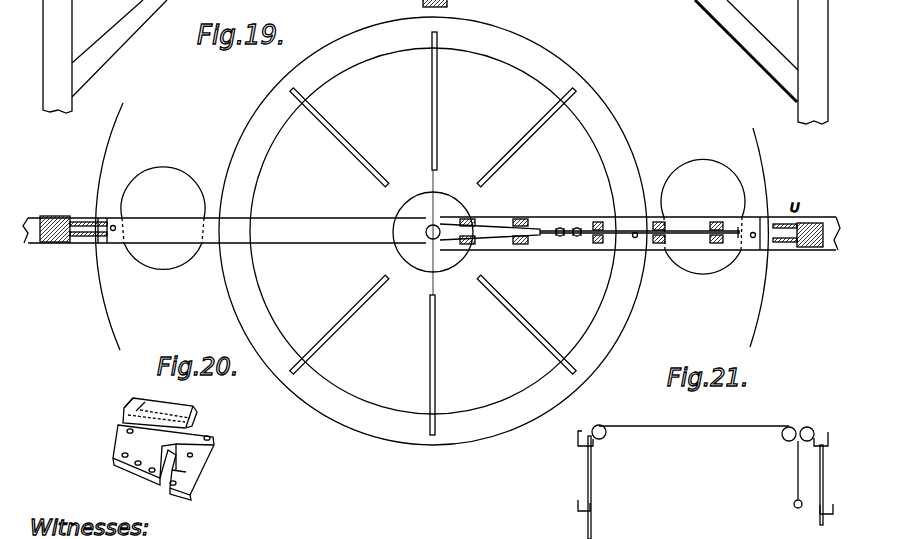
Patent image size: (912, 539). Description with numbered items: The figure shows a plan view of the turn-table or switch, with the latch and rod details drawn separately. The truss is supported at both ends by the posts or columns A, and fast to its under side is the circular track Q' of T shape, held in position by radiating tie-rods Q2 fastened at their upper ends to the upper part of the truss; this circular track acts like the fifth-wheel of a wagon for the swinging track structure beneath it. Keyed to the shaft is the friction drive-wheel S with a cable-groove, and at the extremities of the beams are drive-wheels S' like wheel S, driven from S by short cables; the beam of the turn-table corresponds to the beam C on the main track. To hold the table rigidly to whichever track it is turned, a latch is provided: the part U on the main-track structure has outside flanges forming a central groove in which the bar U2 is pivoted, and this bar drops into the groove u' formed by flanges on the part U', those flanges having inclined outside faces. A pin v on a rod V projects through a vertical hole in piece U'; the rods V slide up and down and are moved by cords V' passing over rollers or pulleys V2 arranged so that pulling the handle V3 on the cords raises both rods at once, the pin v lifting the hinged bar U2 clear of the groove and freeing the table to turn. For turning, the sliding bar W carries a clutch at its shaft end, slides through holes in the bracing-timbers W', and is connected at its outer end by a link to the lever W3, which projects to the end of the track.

In FIG. 19, the posts or columns A is at (435, 62).
In FIG. 19, the beam C is at (500, 4).
In FIG. 19, the circular track Q' is at (433, 231).
In FIG. 19, the radiating tie-rods Q2 is at (433, 233).
In FIG. 19, the friction drive-wheel S is at (433, 232).
In FIG. 19, the drive-wheels S' is at (433, 216).
In FIG. 19, the sliding bar W is at (598, 218).
In FIG. 19, the rod bearing blocks W' is at (523, 220).
In FIG. 19, the lever W3 is at (688, 237).
In FIG. 19, the latch part U is at (55, 240).
In FIG. 20, the latch part U is at (163, 462).
In FIG. 19, the latch U' is at (107, 241).
In FIG. 20, the latch U' is at (197, 468).
In FIG. 19, the bar U2 is at (86, 216).
In FIG. 20, the bar U2 is at (223, 424).
In FIG. 20, the groove u' is at (206, 463).
In FIG. 21, the rod V is at (717, 483).
In FIG. 21, the horizontal wire V' is at (709, 415).
In FIG. 21, the pulley V2 is at (605, 436).
In FIG. 21, the handle V3 is at (789, 474).
In FIG. 21, the pin v is at (699, 467).